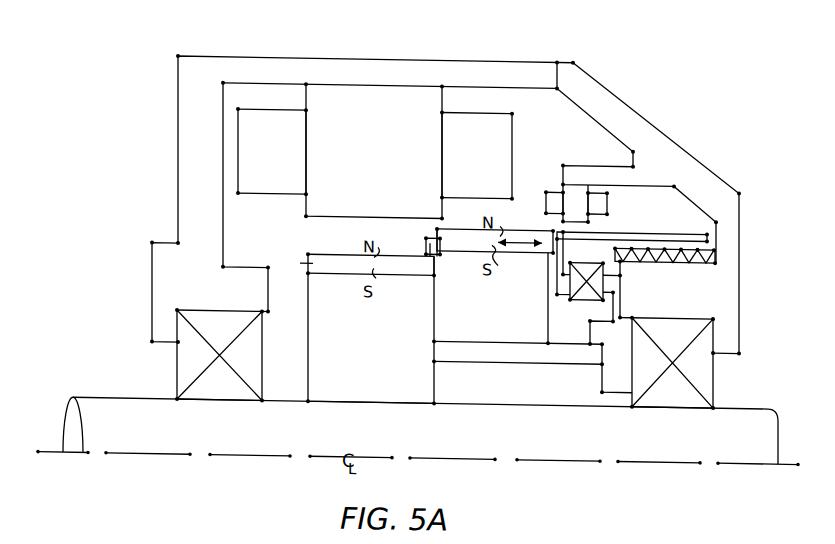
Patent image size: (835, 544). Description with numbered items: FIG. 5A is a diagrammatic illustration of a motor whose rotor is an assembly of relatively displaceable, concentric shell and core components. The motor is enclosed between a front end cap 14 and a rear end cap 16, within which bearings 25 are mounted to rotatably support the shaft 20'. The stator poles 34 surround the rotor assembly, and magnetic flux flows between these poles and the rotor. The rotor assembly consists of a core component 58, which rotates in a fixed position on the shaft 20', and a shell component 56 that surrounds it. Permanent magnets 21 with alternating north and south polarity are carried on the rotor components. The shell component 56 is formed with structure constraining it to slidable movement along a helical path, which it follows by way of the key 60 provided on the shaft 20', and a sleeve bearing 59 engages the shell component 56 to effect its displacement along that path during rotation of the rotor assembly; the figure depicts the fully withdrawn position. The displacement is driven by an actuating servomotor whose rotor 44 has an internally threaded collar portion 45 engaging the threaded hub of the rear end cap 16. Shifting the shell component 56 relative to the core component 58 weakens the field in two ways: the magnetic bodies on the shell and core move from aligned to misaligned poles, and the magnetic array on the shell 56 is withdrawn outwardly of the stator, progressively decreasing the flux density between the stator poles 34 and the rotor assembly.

The front end cap 14 is at (148, 294).
The rear end cap 16 is at (657, 139).
The stator poles 34 is at (417, 101).
The bearings 25 is at (243, 343).
The permanent magnet 21 is at (307, 258).
The shell component 56 is at (425, 234).
The sleeve bearing 59 is at (438, 252).
The core component 58 is at (385, 327).
The key 60 is at (528, 346).
The rotor of actuating servomotor 44 is at (600, 237).
The internally threaded collar portion 45 is at (700, 241).
The shaft 20' is at (418, 457).